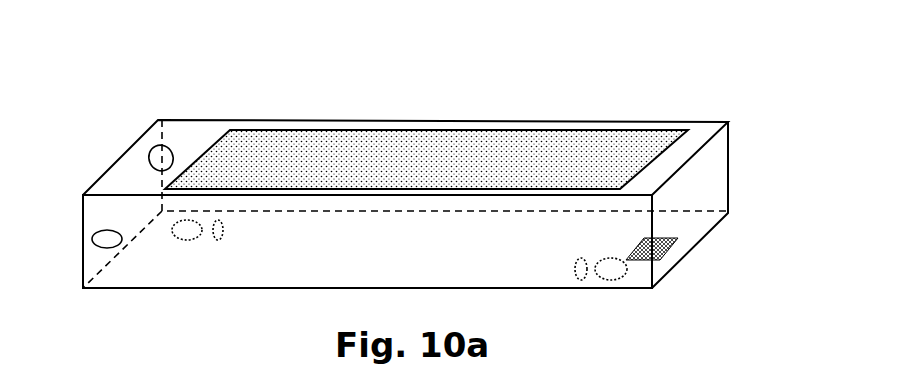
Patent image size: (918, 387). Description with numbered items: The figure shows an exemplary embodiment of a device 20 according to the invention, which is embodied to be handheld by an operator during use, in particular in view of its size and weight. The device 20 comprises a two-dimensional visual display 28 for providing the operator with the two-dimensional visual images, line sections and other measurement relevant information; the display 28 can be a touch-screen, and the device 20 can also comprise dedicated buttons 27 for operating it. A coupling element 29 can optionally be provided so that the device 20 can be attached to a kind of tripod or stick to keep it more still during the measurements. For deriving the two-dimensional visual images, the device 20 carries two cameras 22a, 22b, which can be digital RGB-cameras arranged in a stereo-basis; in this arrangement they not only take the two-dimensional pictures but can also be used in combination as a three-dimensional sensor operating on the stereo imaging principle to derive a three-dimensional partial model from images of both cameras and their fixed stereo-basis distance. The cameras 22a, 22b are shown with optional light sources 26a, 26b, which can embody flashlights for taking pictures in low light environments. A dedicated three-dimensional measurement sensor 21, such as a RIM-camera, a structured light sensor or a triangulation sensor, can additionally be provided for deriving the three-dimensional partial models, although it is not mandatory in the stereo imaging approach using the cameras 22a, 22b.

The device 20 is at (178, 84).
The 3D-measurement-sensor 21 is at (657, 250).
The 2D-visual-image-sensor 22a is at (183, 232).
The 2D-visual-image-sensor 22b is at (617, 278).
The light source 26a is at (217, 242).
The light source 26b is at (583, 279).
The dedicated buttons 27 is at (160, 160).
The 2D visual display 28 is at (290, 152).
The coupling element 29 is at (460, 110).